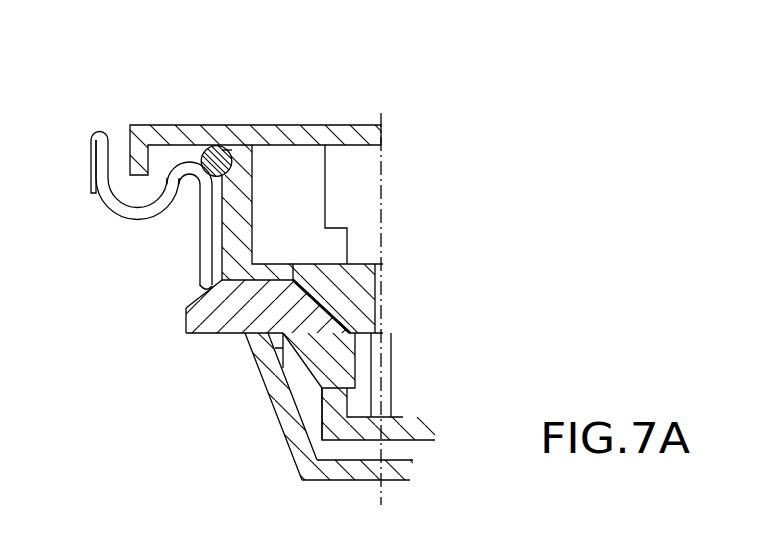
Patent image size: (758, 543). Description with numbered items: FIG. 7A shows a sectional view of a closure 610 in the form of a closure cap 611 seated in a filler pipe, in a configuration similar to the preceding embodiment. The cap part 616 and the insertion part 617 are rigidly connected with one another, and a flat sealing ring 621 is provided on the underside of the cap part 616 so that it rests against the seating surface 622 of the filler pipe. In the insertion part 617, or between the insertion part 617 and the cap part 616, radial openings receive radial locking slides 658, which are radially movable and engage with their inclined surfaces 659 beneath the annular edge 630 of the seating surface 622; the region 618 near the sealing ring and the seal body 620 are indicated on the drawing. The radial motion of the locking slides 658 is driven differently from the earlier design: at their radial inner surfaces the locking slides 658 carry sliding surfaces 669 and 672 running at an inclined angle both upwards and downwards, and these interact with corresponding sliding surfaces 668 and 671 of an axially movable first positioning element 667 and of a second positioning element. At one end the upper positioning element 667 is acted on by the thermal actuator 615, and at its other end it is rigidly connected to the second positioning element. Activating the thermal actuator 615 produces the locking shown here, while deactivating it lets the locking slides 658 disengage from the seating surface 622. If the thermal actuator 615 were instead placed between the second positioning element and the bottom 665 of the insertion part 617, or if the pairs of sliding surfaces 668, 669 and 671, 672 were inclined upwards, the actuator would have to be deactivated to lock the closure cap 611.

The seal assembly 610 is at (390, 110).
The closure cap 611 is at (340, 116).
The thermal actuator 615 is at (352, 194).
The cap part 616 is at (229, 150).
The insertion part 617 is at (281, 453).
The groove 618 is at (232, 150).
The seal body 620 is at (180, 334).
The flat sealing ring 621 is at (204, 150).
The seating surface 622 is at (110, 211).
The annular edge 630 is at (173, 160).
The radial locking slide 658 is at (185, 318).
The inclined surface 659 is at (187, 301).
The bottom 665 is at (404, 472).
The first positioning element 667 is at (365, 310).
The sliding surface 668 is at (332, 310).
The sliding surface 669 is at (332, 310).
The sliding surface 671 is at (323, 384).
The sliding surface 672 is at (323, 384).